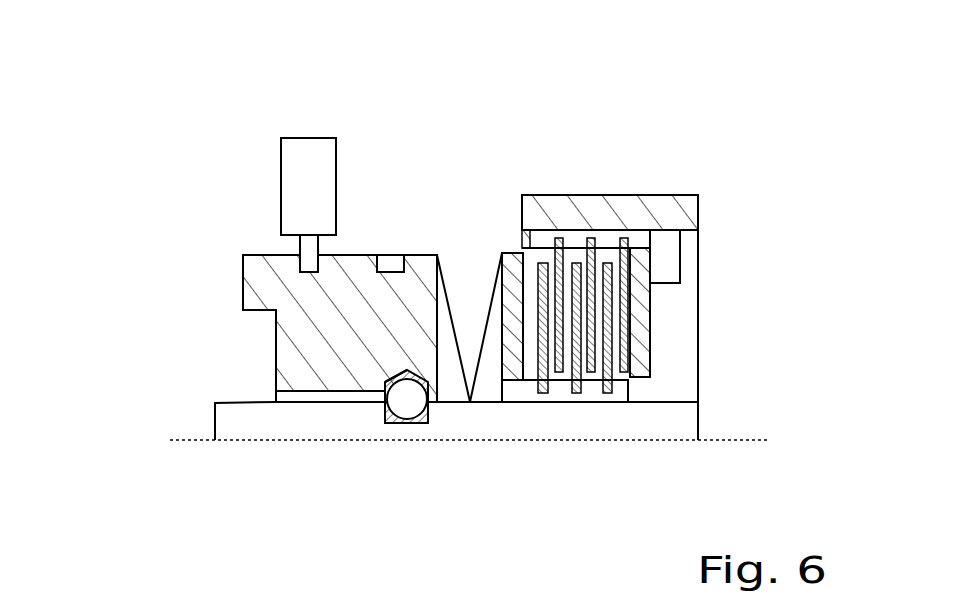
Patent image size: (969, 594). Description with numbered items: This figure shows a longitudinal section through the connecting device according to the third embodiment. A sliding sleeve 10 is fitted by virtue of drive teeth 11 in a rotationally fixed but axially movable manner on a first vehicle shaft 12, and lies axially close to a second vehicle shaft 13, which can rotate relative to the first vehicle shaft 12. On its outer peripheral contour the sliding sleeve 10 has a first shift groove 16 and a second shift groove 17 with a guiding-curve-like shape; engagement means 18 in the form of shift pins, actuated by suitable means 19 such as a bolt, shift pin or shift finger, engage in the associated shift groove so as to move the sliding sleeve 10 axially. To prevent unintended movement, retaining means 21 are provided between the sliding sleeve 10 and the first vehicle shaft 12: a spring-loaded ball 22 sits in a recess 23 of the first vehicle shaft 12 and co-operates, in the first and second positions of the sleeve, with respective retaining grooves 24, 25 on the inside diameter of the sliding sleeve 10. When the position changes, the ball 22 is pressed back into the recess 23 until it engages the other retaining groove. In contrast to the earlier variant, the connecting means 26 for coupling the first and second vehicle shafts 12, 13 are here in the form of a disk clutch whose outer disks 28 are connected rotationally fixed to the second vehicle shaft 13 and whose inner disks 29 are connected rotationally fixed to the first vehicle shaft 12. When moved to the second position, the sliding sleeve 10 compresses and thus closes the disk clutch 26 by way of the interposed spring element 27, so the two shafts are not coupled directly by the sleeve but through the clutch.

The sliding sleeve 10 is at (272, 287).
The drive teeth 11 is at (275, 391).
The first vehicle shaft 12 is at (223, 418).
The second vehicle shaft 13 is at (612, 210).
The first shift groove 16 is at (275, 258).
The second shift groove 17 is at (392, 263).
The engagement means 18 is at (285, 133).
The actuating means 19 is at (298, 245).
The retaining means 21 is at (405, 428).
The spring-loaded ball 22 is at (430, 405).
The recess 23 is at (413, 400).
The first retaining groove 24 is at (288, 336).
The second retaining groove 25 is at (385, 376).
The connecting means 26 is at (662, 307).
The spring element 27 is at (462, 305).
The outer disks 28 is at (550, 265).
The inner disks 29 is at (582, 367).